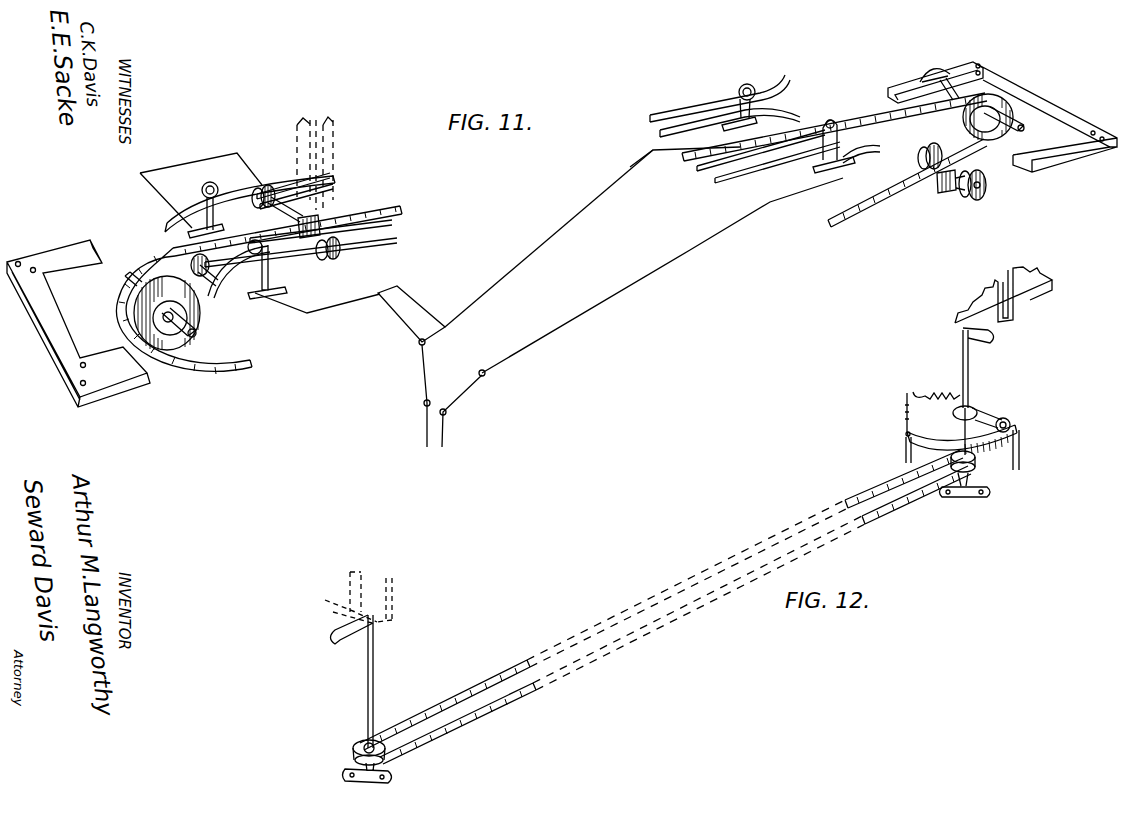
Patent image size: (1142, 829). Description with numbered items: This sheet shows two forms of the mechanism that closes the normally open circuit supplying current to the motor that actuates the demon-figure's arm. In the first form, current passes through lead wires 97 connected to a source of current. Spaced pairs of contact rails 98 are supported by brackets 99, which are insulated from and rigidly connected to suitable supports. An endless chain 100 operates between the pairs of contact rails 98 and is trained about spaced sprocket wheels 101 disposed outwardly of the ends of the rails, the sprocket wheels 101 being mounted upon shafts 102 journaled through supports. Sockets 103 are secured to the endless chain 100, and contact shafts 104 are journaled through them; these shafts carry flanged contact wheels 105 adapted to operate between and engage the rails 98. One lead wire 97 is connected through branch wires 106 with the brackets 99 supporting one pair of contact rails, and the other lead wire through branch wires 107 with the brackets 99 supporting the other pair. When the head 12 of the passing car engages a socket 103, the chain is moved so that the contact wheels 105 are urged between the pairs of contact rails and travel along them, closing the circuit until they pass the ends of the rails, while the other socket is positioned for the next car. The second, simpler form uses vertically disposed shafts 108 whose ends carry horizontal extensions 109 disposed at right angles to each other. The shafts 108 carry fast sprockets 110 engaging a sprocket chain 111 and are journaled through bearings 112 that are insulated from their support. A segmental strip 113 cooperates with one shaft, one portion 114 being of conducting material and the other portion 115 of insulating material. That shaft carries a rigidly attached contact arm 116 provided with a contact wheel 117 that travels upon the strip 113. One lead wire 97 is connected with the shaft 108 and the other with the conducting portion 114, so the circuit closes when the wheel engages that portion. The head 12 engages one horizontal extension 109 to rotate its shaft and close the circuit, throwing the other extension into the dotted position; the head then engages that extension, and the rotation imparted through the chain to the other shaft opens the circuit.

In FIG. 11, the head 12 is at (333, 148).
In FIG. 12, the head 12 is at (1022, 320).
In FIG. 11, the lead wires 97 is at (430, 399).
In FIG. 12, the lead wires 97 is at (928, 401).
In FIG. 11, the contact rails 98 is at (232, 198).
In FIG. 11, the brackets 99 is at (757, 126).
In FIG. 11, the endless chain 100 is at (400, 206).
In FIG. 11, the sprocket wheels 101 is at (190, 322).
In FIG. 11, the shafts 102 is at (195, 340).
In FIG. 11, the sockets 103 is at (322, 215).
In FIG. 11, the contact shafts 104 is at (276, 185).
In FIG. 11, the flanged contact wheels 105 is at (345, 254).
In FIG. 11, the branch wires 106 is at (405, 320).
In FIG. 11, the branch wires 107 is at (586, 311).
In FIG. 12, the vertically disposed shafts 108 is at (969, 370).
In FIG. 12, the horizontal extensions 109 is at (1000, 338).
In FIG. 12, the fast sprockets 110 is at (978, 458).
In FIG. 12, the sprocket chain 111 is at (893, 518).
In FIG. 12, the bearings 112 is at (950, 503).
In FIG. 12, the segmental strip 113 is at (962, 436).
In FIG. 12, the conducting portion 114 is at (905, 450).
In FIG. 12, the insulating portion 115 is at (1020, 455).
In FIG. 12, the contact arm 116 is at (985, 414).
In FIG. 12, the contact wheel 117 is at (1012, 421).